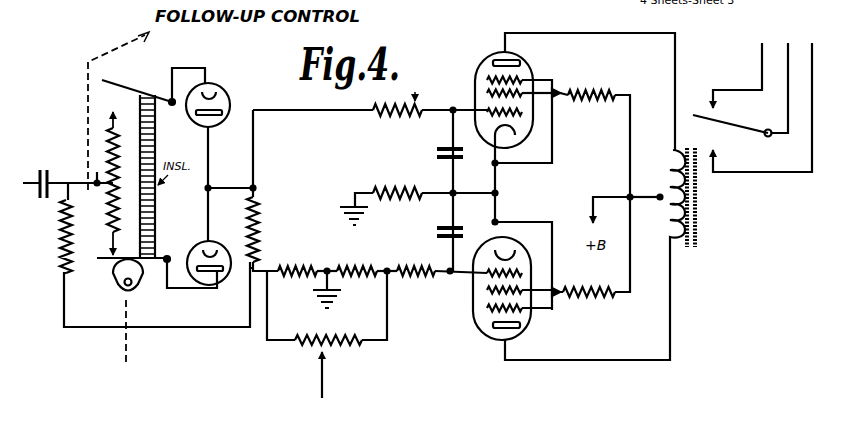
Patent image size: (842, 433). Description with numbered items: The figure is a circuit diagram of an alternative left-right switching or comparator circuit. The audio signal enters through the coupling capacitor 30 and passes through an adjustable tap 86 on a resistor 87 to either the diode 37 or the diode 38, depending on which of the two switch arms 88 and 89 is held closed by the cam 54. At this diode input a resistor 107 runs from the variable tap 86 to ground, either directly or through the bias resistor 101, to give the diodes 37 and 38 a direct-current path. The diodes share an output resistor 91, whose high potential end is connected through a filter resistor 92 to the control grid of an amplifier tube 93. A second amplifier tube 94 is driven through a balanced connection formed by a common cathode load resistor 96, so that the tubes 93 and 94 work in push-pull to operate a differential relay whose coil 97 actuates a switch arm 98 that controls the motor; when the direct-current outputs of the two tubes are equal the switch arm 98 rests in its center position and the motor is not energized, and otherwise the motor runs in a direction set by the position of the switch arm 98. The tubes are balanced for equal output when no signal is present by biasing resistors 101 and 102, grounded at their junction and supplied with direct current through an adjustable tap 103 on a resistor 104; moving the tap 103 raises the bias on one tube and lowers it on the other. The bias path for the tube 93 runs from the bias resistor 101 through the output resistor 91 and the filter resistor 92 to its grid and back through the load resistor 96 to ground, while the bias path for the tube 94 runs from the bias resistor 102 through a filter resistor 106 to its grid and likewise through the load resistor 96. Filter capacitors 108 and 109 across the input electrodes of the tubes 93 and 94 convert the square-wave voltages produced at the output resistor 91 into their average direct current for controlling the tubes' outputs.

The coupling capacitor 30 is at (40, 172).
The adjustable tap 86 is at (97, 172).
The resistor 87 is at (108, 140).
The switch arm 88 is at (125, 90).
The diode 37 is at (235, 90).
The diode 38 is at (217, 288).
The cam 54 is at (122, 290).
The switch arm 89 is at (107, 275).
The resistor 107 is at (58, 252).
The output resistor 91 is at (260, 230).
The filter resistor 92 is at (372, 118).
The amplifier tube 93 is at (480, 73).
The second amplifier tube 94 is at (478, 328).
The cathode load resistor 96 is at (403, 184).
The coil 97 is at (662, 165).
The switch arm 98 is at (737, 128).
The biasing resistor 101 is at (297, 258).
The biasing resistor 102 is at (352, 262).
The adjustable tap 103 is at (318, 364).
The resistor 104 is at (356, 345).
The filter resistor 106 is at (416, 282).
The filter capacitor 108 is at (437, 151).
The filter capacitor 109 is at (437, 229).